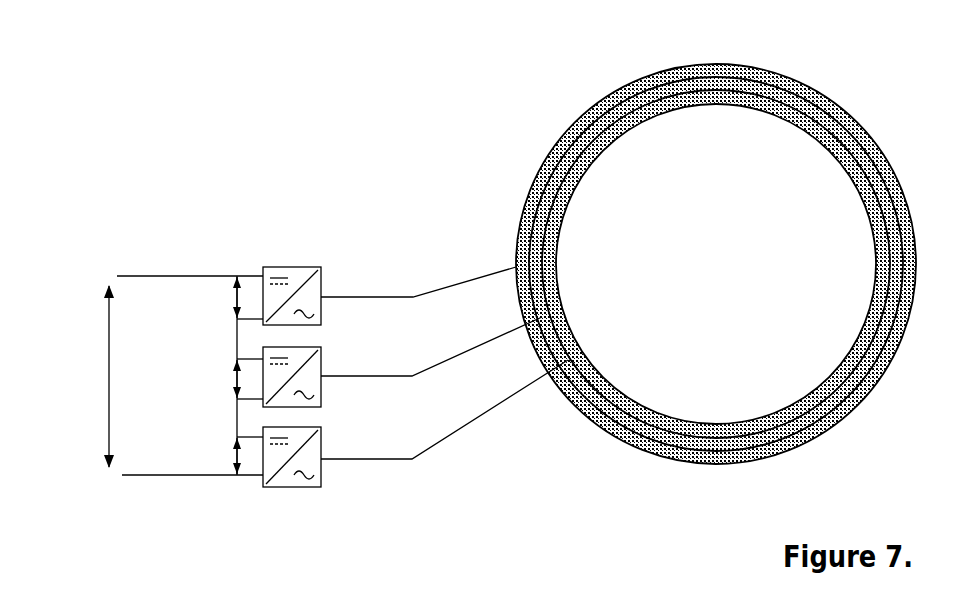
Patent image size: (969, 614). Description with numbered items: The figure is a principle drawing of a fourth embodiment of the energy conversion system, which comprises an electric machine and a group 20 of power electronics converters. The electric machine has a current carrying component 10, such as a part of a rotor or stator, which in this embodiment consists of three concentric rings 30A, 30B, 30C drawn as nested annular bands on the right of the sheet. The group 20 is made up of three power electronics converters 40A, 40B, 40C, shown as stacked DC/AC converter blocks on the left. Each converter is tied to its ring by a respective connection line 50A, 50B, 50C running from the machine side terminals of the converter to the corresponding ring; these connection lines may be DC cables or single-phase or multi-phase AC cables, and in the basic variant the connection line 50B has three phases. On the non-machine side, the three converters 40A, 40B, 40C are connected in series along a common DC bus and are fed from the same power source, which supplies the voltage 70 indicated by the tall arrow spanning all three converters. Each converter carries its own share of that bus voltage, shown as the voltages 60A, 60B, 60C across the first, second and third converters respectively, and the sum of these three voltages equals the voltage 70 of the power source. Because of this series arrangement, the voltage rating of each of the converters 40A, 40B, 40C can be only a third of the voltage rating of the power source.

The current carrying component 10 is at (699, 240).
The group of power electronics converters 20 is at (292, 353).
The outer concentric ring 30A is at (803, 93).
The concentric ring 30B is at (832, 124).
The concentric ring 30C is at (797, 127).
The power electronics converter 40A is at (297, 265).
The power electronics converter 40B is at (325, 394).
The power electronics converter 40C is at (295, 489).
The connection line 50A is at (343, 297).
The connection line 50B is at (343, 376).
The connection line 50C is at (340, 460).
The voltage of power electronics converter 40A 60A is at (228, 299).
The voltage of power electronics converter 40B 60B is at (228, 380).
The voltage of power electronics converter 40C 60C is at (228, 457).
The voltage 70 is at (105, 368).